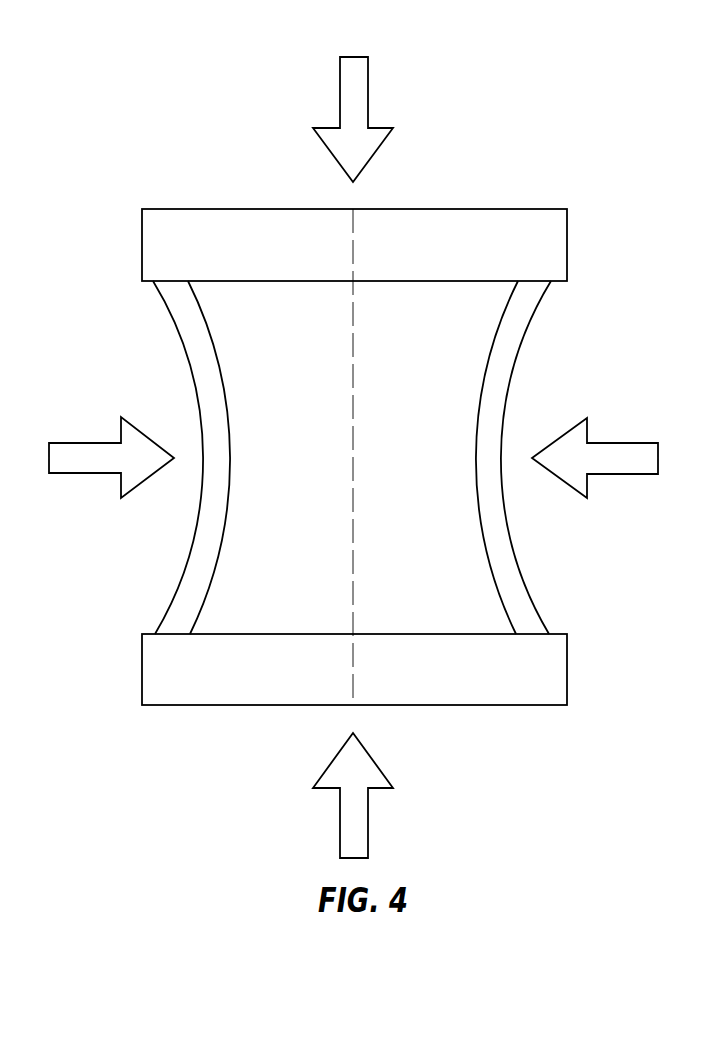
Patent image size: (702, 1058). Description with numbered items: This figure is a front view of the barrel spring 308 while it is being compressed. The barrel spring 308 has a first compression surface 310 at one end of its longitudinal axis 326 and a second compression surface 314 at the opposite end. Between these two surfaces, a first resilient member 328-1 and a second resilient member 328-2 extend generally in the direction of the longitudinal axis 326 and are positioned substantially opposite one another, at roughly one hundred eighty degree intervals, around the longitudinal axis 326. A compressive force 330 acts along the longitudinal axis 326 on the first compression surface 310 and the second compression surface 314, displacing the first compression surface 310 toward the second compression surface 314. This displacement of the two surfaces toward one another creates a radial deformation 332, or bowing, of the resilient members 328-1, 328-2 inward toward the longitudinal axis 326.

The barrel spring 308 is at (604, 84).
The first compression surface 310 is at (505, 209).
The second compression surface 314 is at (505, 706).
The longitudinal axis 326 is at (353, 224).
The first resilient member 328-1 is at (527, 599).
The second resilient member 328-2 is at (180, 598).
The compressive force 330 is at (370, 77).
The radial deformation 332 is at (80, 443).